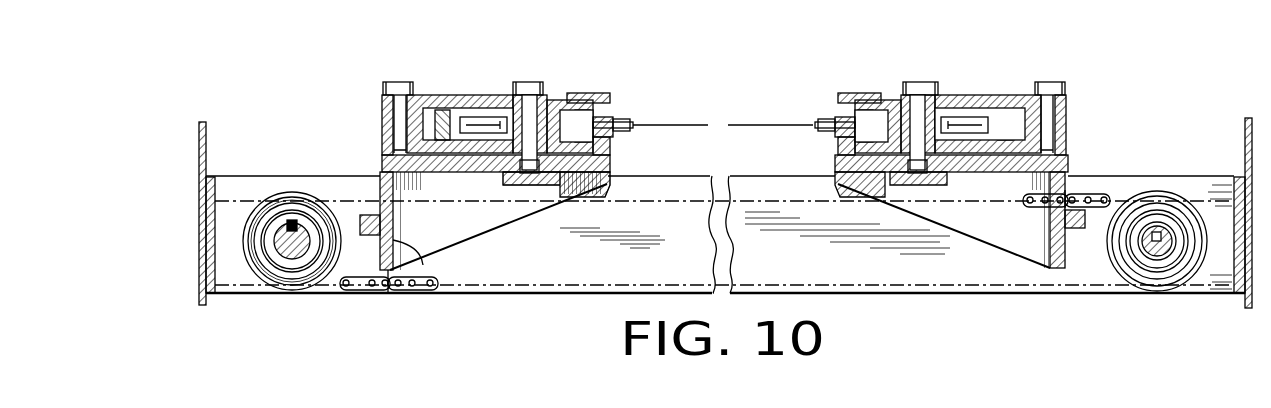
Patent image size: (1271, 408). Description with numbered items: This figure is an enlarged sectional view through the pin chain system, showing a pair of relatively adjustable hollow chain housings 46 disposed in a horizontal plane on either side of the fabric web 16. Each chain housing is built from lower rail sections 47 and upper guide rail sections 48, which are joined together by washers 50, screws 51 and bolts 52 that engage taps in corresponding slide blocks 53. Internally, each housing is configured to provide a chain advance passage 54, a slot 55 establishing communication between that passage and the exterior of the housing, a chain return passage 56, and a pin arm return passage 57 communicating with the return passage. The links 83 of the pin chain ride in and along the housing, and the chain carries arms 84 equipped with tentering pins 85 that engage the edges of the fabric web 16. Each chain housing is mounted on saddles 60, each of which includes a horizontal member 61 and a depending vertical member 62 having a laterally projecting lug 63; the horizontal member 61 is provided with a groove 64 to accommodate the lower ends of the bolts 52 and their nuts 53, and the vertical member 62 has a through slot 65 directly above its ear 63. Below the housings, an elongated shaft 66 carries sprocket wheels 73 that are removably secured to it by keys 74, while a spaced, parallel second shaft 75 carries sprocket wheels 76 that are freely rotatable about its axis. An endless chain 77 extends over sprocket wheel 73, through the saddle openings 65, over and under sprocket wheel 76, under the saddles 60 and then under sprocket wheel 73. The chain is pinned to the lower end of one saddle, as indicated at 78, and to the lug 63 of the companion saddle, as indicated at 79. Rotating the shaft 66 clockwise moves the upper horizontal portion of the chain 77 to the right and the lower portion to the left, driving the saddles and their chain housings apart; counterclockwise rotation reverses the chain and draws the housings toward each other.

The fabric web 16 is at (760, 123).
The chain housing 46 is at (676, 116).
The lower rail section 47 is at (603, 140).
The upper guide rail section 48 is at (550, 102).
The washer 50 is at (382, 100).
The screw 51 is at (398, 82).
The bolt 52 is at (528, 82).
The slide block 53 is at (504, 176).
The chain advance passage 54 is at (580, 95).
The slot 55 is at (610, 120).
The chain return passage 56 is at (428, 96).
The pin arm return passage 57 is at (482, 117).
The saddle 60 is at (497, 232).
The horizontal member 61 is at (577, 191).
The vertical member 62 is at (416, 263).
The lug 63 is at (362, 226).
The groove 64 is at (519, 184).
The through slot 65 is at (382, 185).
The shaft 66 is at (275, 247).
The sprocket wheel 73 is at (262, 266).
The key 74 is at (285, 211).
The second shaft 75 is at (1165, 240).
The sprocket wheel 76 is at (1177, 214).
The endless chain 77 is at (408, 292).
The pin connection 78 is at (387, 292).
The pin connection 79 is at (1086, 196).
The link 83 is at (445, 112).
The arm 84 is at (620, 130).
The tentering pin 85 is at (626, 128).